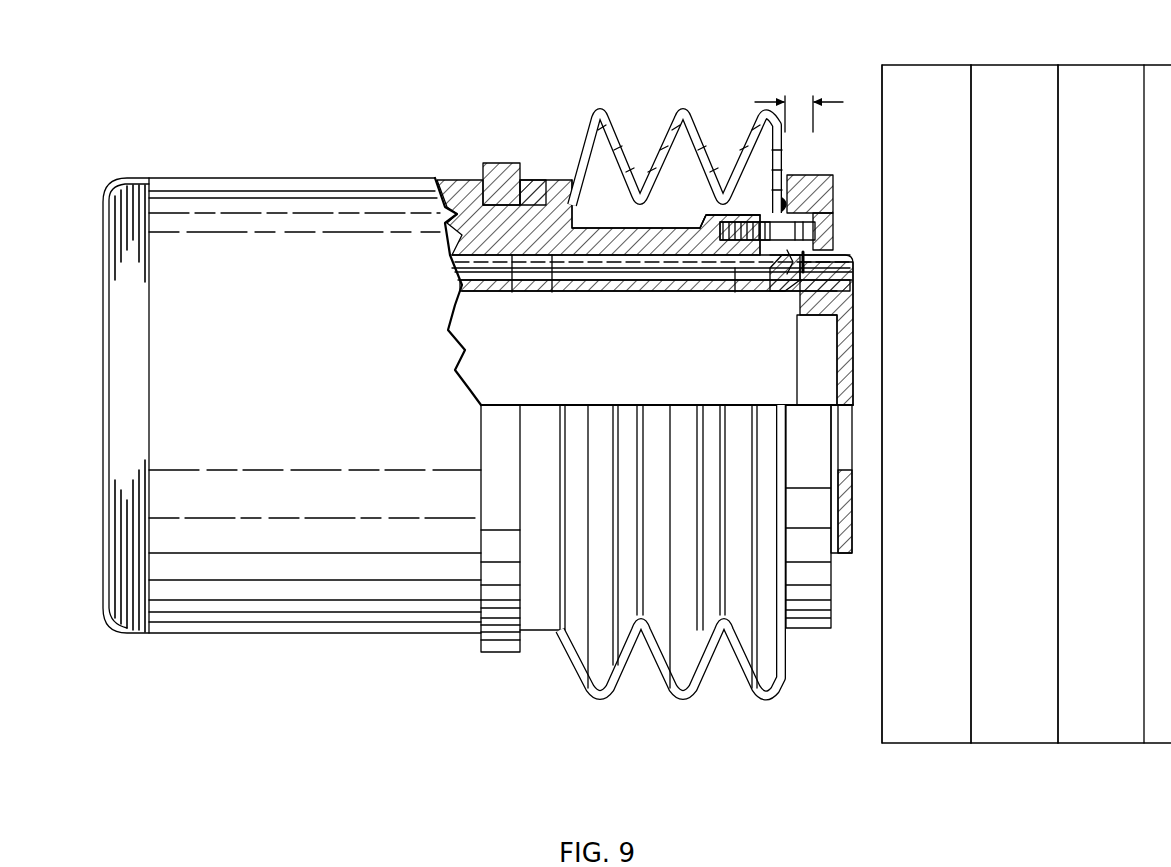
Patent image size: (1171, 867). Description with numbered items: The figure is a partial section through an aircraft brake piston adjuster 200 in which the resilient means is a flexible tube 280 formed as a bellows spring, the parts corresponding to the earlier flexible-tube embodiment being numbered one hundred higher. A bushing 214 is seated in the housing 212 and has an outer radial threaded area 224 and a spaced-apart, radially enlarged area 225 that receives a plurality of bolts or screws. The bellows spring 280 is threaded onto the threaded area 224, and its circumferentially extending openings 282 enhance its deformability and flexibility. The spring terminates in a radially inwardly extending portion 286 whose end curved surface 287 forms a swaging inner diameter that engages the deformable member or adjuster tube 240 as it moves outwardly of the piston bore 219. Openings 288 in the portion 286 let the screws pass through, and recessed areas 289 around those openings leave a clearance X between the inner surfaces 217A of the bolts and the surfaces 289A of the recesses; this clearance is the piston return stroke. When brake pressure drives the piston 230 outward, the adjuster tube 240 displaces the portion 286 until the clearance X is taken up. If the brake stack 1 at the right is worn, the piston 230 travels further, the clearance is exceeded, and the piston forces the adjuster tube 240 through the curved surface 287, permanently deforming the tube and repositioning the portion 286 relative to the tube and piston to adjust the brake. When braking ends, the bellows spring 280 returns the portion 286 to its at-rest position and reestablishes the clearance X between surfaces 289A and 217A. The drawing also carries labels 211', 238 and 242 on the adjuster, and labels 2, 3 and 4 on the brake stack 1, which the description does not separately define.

The brake piston adjuster 200 is at (405, 92).
The gap dimension region 211' is at (796, 75).
The housing 212 is at (222, 195).
The bushing 214 is at (490, 163).
The inner surfaces of bolts 217A is at (825, 192).
The piston bore 219 is at (510, 258).
The outer radial threaded area 224 is at (530, 195).
The radially enlarged area 225 is at (735, 255).
The piston 230 is at (550, 292).
The end plate 238 is at (835, 388).
The deformable member (adjuster tube) 240 is at (598, 272).
The nut 242 is at (770, 266).
The bellows spring (flexible tube) 280 is at (588, 690).
The circumferentially extending openings 282 is at (548, 205).
The radially inwardly extending portion 286 is at (832, 250).
The end curved surface 287 is at (790, 257).
The openings 288 is at (755, 272).
The recessed areas 289 is at (800, 252).
The surfaces of recesses 289A is at (785, 205).
The brake stack 1 is at (992, 768).
The first wall layer 2 is at (922, 730).
The second wall layer 3 is at (1013, 725).
The third wall layer 4 is at (1098, 723).